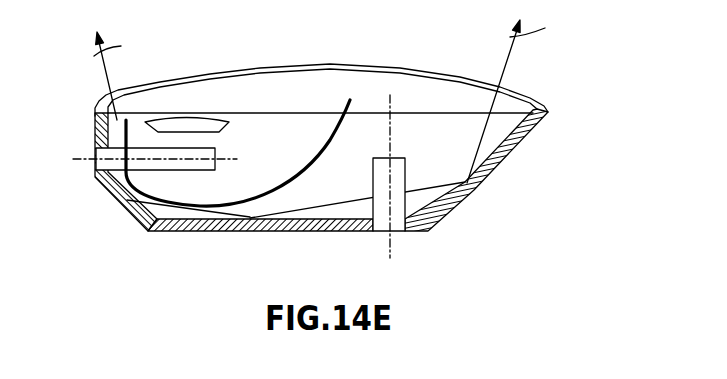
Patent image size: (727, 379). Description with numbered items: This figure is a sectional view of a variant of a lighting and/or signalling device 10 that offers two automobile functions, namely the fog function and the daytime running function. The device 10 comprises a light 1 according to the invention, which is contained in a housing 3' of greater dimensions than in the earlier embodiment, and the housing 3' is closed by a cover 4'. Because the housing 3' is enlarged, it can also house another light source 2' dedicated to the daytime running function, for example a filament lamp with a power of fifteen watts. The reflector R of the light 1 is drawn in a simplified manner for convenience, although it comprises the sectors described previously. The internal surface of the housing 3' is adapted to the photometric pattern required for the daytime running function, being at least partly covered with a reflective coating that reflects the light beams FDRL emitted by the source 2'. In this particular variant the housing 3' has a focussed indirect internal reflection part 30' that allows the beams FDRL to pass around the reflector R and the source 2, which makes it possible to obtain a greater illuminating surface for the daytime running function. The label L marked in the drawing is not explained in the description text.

The lighting and/or signalling device 10 is at (301, 136).
The cover 4' is at (321, 78).
The focussed indirect internal reflection part 30' is at (106, 181).
The light 1 is at (213, 192).
The housing 3' is at (476, 170).
The hosel L is at (188, 127).
The source 2 is at (159, 170).
The reflector R is at (297, 175).
The light source 2' is at (395, 176).
The light beams FDRL is at (337, 100).